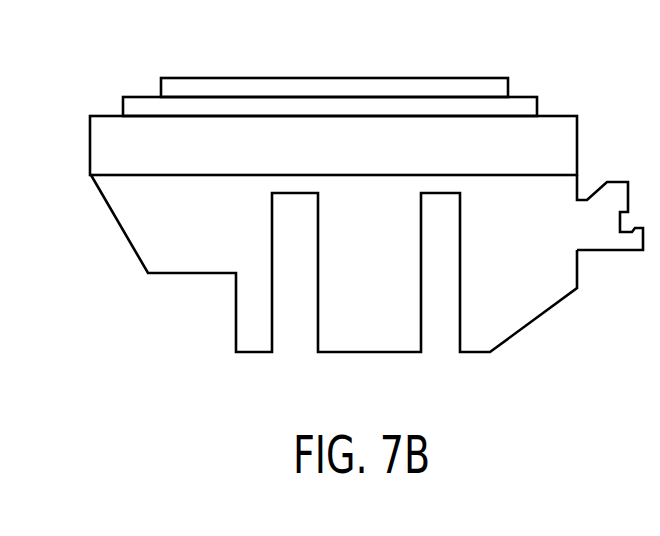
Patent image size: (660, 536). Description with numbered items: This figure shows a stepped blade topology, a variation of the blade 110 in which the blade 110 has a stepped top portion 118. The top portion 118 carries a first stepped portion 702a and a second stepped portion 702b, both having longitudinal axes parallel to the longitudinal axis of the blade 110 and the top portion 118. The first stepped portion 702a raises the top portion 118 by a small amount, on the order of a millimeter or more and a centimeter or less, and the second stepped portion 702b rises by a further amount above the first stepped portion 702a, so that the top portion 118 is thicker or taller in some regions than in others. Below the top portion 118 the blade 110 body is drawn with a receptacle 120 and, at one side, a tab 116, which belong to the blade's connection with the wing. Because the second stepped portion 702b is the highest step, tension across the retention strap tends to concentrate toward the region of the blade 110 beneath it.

The blade 110 is at (366, 203).
The tab 116 is at (602, 225).
The top portion 118 is at (384, 160).
The receptacle 120 is at (386, 278).
The first stepped portion 702a is at (455, 107).
The second stepped portion 702b is at (377, 92).